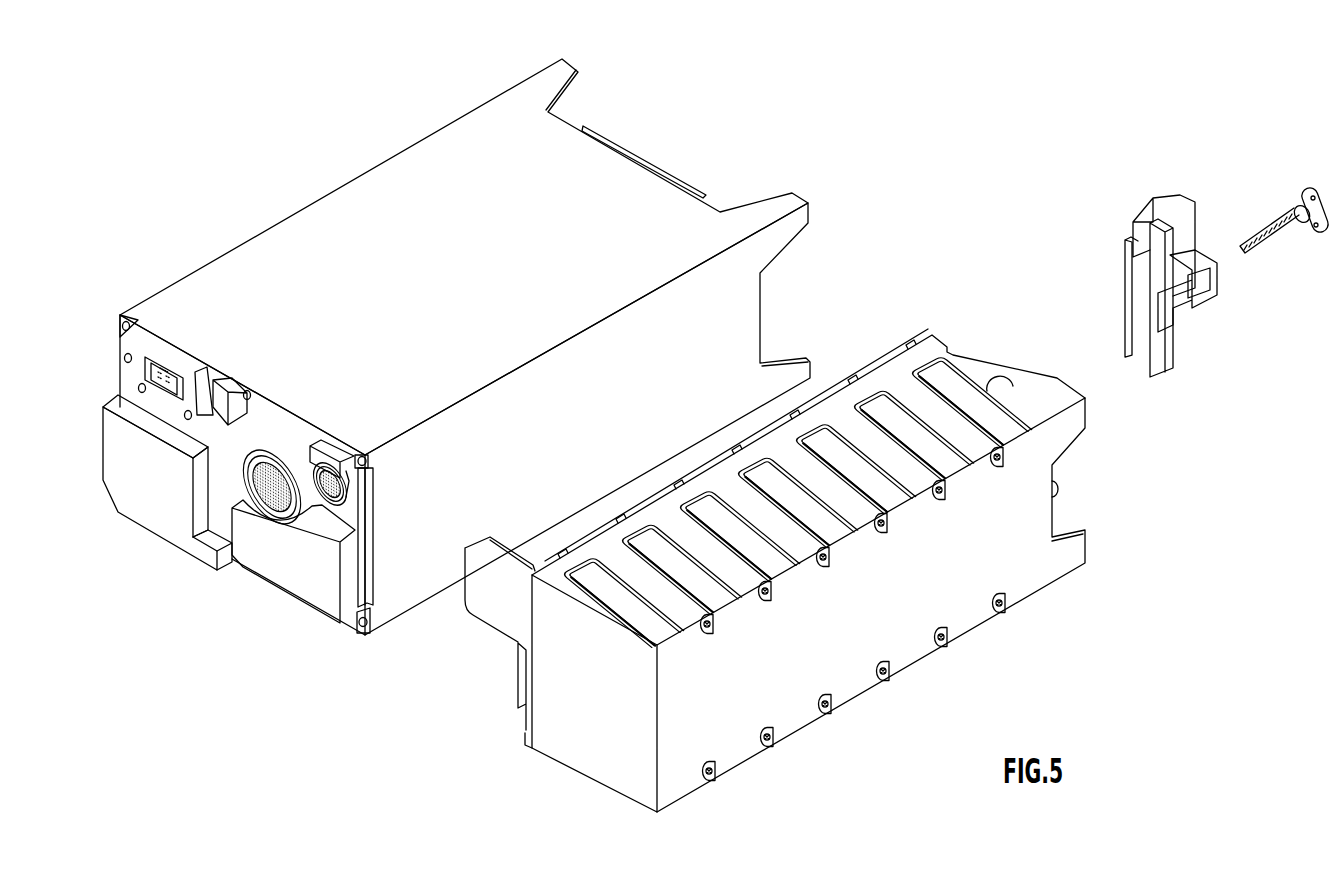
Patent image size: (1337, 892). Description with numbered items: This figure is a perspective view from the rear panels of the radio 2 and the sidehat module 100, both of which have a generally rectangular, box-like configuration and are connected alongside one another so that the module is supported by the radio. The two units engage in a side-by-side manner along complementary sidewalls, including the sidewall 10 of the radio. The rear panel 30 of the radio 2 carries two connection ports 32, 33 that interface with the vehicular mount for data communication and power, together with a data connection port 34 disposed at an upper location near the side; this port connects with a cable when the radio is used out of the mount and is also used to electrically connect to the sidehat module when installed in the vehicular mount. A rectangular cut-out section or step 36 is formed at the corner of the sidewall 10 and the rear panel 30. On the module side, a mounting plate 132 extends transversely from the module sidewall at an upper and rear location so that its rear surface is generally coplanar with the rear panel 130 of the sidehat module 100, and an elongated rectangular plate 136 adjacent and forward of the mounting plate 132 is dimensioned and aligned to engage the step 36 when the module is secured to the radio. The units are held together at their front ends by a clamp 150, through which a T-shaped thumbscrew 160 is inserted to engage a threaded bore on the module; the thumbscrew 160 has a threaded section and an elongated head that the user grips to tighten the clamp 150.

The radio 2 is at (447, 353).
The sidewall 10 is at (740, 322).
The rear panel 30 is at (218, 510).
The connection port 32 is at (181, 378).
The connection port 33 is at (282, 497).
The data connection port 34 is at (340, 502).
The rectangular cut-out section or step 36 is at (368, 552).
The sidehat module 100 is at (750, 574).
The rear panel 130 is at (598, 720).
The mounting plate 132 is at (467, 598).
The rectangular plate 136 is at (522, 688).
The clamp 150 is at (1193, 364).
The thumbscrew 160 is at (1282, 250).